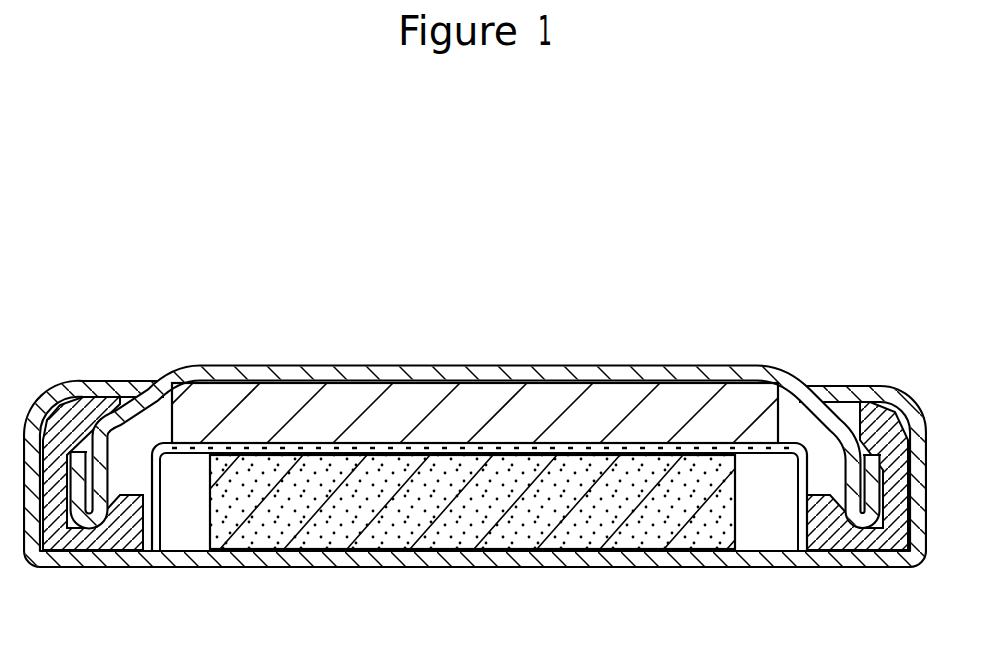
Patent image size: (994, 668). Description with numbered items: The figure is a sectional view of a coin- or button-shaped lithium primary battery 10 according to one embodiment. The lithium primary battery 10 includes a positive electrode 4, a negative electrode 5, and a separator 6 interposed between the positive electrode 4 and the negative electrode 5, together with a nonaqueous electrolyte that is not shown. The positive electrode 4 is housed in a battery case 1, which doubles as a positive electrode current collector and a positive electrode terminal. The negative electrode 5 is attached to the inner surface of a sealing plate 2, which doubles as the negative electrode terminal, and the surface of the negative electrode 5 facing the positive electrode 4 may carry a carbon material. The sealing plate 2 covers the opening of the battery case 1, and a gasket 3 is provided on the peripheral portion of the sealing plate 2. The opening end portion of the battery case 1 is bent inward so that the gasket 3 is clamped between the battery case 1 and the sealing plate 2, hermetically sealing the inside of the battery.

The battery case 1 is at (793, 562).
The sealing plate 2 is at (608, 363).
The gasket 3 is at (887, 384).
The positive electrode 4 is at (351, 525).
The negative electrode 5 is at (426, 403).
The separator 6 is at (256, 447).
The lithium primary battery 10 is at (591, 206).